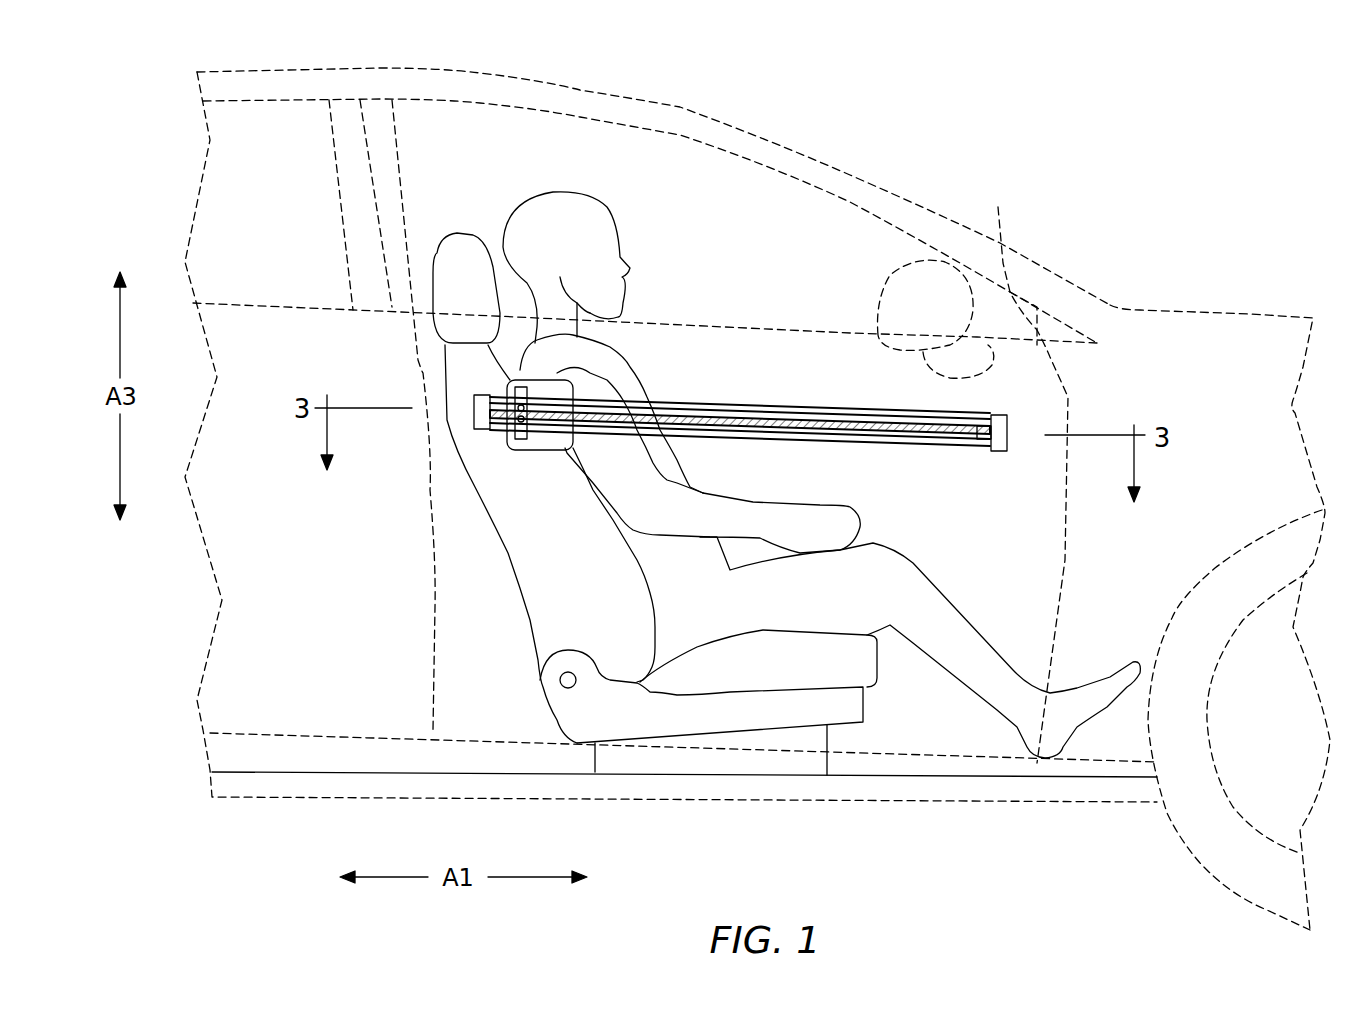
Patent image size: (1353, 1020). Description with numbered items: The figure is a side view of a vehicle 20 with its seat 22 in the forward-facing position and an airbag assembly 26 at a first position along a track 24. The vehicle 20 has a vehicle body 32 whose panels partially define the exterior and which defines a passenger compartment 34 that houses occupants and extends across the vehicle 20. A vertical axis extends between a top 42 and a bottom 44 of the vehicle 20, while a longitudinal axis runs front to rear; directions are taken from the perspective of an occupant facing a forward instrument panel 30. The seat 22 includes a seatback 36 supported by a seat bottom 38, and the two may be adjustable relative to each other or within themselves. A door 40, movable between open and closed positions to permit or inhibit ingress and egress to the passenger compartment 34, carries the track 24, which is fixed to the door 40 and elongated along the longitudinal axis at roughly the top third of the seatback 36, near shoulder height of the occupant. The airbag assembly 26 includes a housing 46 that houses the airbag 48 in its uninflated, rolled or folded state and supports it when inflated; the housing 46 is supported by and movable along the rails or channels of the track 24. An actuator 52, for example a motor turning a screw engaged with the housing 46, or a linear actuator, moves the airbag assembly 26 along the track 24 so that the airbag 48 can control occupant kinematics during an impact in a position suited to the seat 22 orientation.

The vehicle 20 is at (920, 168).
The seat 22 is at (655, 542).
The track 24 is at (778, 400).
The airbag assembly 26 is at (679, 412).
The forward instrument panel 30 is at (1001, 245).
The vehicle body 32 is at (1177, 310).
The passenger compartment 34 is at (730, 175).
The seatback 36 is at (530, 628).
The seat bottom 38 is at (735, 670).
The door 40 is at (707, 357).
The top 42 is at (683, 113).
The bottom 44 is at (975, 805).
The housing 46 is at (513, 440).
The airbag 48 is at (507, 380).
The actuator 52 is at (981, 445).